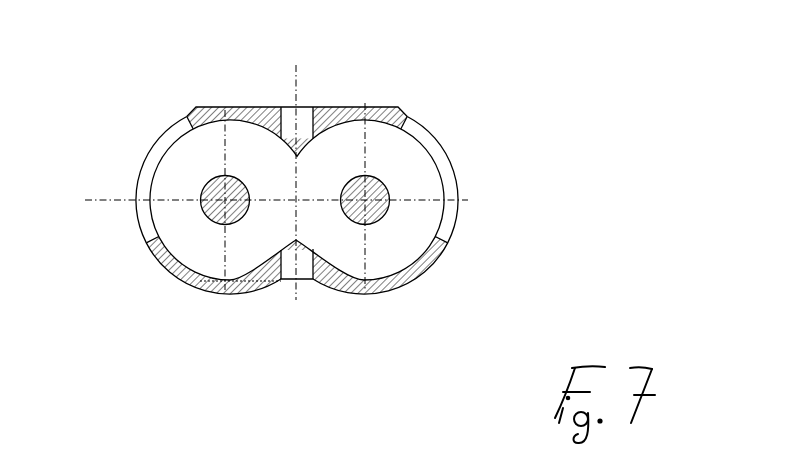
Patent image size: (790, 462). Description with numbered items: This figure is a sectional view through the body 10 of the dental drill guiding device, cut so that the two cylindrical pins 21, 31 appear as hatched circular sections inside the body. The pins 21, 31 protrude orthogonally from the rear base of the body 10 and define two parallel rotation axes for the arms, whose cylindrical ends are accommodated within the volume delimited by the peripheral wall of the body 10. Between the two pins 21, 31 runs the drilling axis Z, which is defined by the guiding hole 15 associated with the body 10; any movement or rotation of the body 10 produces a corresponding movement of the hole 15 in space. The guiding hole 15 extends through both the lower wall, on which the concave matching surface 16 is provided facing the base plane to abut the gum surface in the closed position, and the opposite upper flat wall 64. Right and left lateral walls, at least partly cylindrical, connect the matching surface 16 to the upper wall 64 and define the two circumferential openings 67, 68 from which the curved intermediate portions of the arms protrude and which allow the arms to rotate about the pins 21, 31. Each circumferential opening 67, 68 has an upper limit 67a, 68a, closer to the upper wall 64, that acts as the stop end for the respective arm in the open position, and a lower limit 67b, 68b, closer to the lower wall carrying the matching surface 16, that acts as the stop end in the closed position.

The body 10 is at (114, 82).
The circumferential opening 68 is at (137, 190).
The circumferential opening 67 is at (459, 184).
The upper flat wall 64 is at (336, 103).
The matching surface 16 is at (331, 291).
The guiding hole 15 is at (287, 270).
The upper limit 68a is at (186, 116).
The lower limit 68b is at (149, 244).
The upper limit 67a is at (404, 119).
The lower limit 67b is at (449, 238).
The cylindrical pin 31 is at (203, 186).
The cylindrical pin 21 is at (382, 190).
The drilling axis Z is at (290, 87).